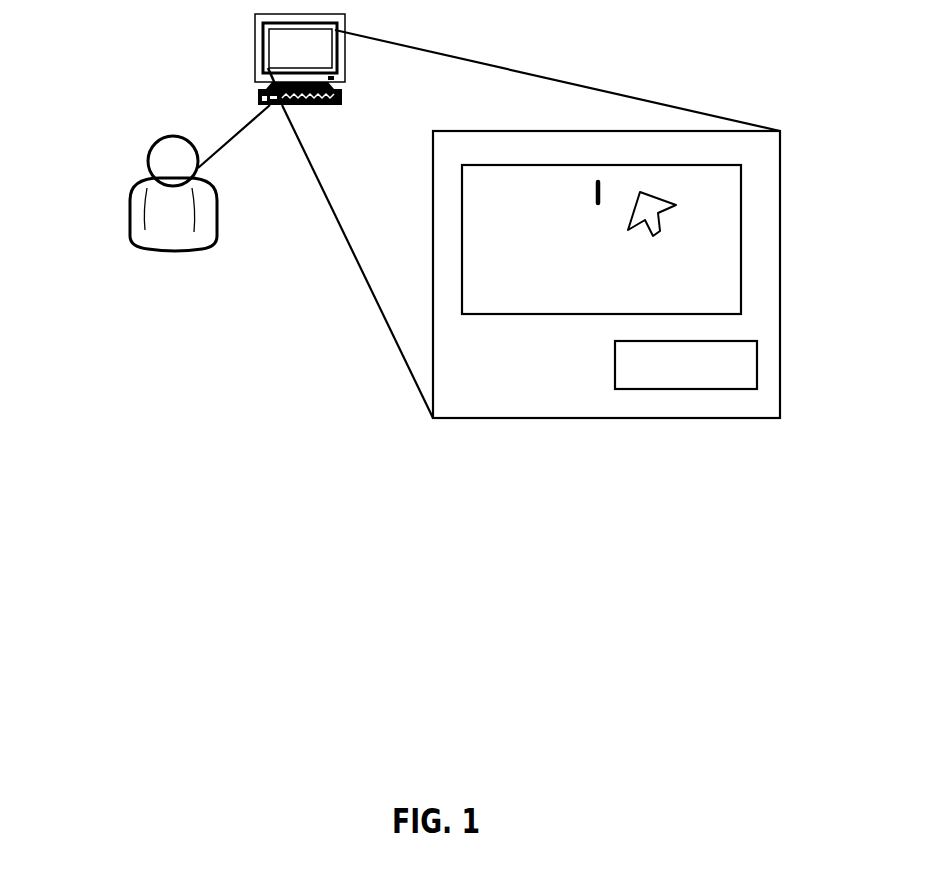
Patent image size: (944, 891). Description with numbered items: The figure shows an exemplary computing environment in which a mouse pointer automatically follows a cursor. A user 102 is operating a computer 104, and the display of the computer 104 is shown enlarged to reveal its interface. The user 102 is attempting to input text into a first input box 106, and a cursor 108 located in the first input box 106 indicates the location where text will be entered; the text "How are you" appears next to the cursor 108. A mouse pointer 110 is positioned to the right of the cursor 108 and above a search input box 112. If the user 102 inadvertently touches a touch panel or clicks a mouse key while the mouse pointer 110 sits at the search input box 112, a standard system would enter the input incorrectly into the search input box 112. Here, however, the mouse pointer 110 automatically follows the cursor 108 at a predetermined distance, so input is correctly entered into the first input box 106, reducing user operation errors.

The user 102 is at (130, 195).
The computer 104 is at (345, 84).
The first input box 106 is at (462, 240).
The cursor 108 is at (603, 192).
The mouse pointer 110 is at (656, 232).
The search input box 112 is at (638, 389).